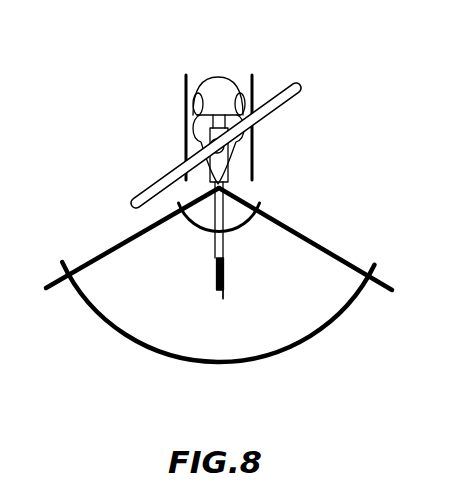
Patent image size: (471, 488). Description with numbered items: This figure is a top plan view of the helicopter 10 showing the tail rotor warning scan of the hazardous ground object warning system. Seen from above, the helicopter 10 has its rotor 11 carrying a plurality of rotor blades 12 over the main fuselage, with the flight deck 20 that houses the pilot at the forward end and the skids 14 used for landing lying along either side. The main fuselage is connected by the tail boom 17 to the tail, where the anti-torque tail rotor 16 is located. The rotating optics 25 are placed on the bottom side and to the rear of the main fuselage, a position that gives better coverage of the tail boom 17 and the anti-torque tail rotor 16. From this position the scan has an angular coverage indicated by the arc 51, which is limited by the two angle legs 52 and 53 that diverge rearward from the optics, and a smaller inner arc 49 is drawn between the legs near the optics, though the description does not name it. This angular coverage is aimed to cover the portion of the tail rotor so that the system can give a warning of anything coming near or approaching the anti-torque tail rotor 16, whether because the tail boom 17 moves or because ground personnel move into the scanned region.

The helicopter 10 is at (284, 61).
The flight deck 20 is at (217, 92).
The rotating optics 25 is at (236, 163).
The rotor 11 is at (209, 147).
The skids 14 is at (186, 98).
The rotor blades 12 is at (298, 87).
The angle leg 53 is at (135, 235).
The angle leg 52 is at (318, 245).
The inner arc 49 is at (261, 205).
The arc 51 is at (301, 343).
The tail boom 17 is at (215, 245).
The anti-torque tail rotor 16 is at (222, 298).